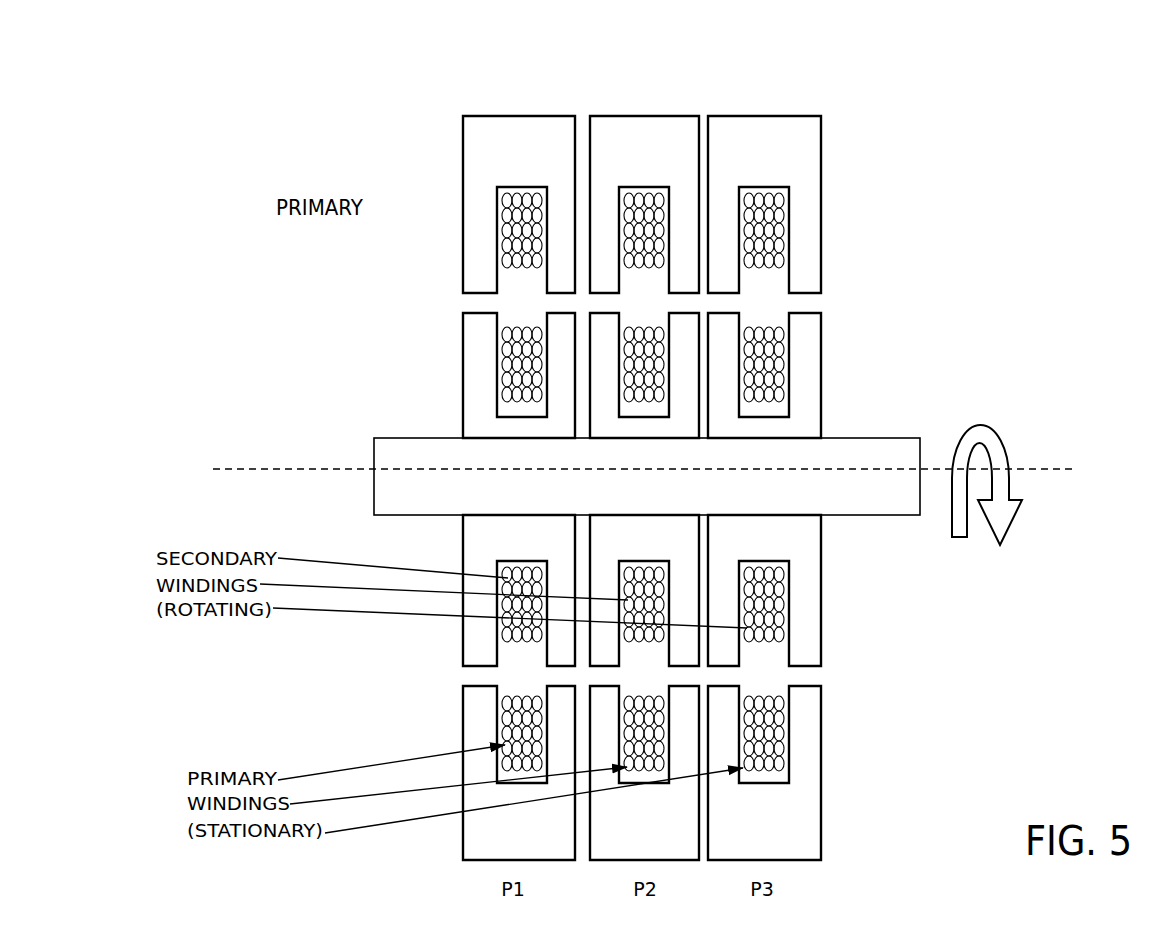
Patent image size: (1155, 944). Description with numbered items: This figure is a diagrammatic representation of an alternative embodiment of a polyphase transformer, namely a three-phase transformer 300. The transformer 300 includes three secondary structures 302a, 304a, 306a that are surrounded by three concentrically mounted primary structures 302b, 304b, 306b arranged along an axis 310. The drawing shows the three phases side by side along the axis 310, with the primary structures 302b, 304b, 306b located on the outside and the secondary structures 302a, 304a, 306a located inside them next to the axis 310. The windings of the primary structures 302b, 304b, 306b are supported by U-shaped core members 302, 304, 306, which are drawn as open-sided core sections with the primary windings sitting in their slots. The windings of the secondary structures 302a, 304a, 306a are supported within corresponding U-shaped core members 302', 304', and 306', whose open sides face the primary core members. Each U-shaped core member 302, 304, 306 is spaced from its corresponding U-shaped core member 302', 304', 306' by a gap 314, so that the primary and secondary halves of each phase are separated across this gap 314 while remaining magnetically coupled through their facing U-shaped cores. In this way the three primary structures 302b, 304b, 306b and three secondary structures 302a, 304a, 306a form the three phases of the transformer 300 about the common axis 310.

The three-phase transformer 300 is at (1032, 167).
The U-shaped core member 302 is at (522, 457).
The U-shaped core member 304 is at (644, 457).
The U-shaped core member 306 is at (764, 457).
The U-shaped core member 302' is at (522, 484).
The U-shaped core member 304' is at (644, 484).
The U-shaped core member 306' is at (764, 484).
The secondary structure 302a is at (461, 389).
The secondary structure 304a is at (691, 309).
The secondary structure 306a is at (827, 389).
The primary structure 302b is at (523, 108).
The primary structure 304b is at (642, 108).
The primary structure 306b is at (773, 109).
The axis 310 is at (1060, 471).
The gap 314 is at (461, 302).